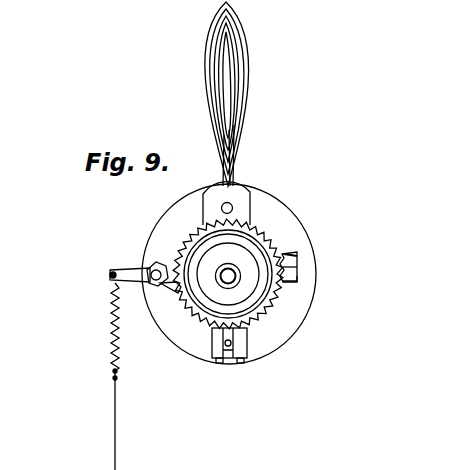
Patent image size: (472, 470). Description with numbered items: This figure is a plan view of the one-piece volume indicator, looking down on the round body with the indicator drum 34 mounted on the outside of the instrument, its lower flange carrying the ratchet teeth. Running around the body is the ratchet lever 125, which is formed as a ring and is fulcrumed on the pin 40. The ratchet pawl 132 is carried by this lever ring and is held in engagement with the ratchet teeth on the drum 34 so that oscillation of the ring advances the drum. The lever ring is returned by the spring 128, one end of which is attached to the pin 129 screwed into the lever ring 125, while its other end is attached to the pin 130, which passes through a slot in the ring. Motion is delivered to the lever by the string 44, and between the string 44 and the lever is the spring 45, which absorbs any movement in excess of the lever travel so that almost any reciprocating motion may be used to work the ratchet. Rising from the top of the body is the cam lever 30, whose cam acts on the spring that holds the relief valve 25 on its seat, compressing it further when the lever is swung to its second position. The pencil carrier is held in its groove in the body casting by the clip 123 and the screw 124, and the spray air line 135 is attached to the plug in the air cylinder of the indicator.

The cam lever 30 is at (236, 135).
The relief valve 25 is at (232, 204).
The indicator drum 34 is at (268, 237).
The pin 129 is at (292, 258).
The spring 128 is at (294, 268).
The pin 130 is at (295, 278).
The pin 40 is at (247, 343).
The clip 123 is at (220, 359).
The screw 124 is at (241, 359).
The spray air line 135 is at (224, 281).
The ratchet lever 125 is at (130, 271).
The ratchet pawl 132 is at (140, 285).
The spring 45 is at (113, 356).
The string 44 is at (115, 410).